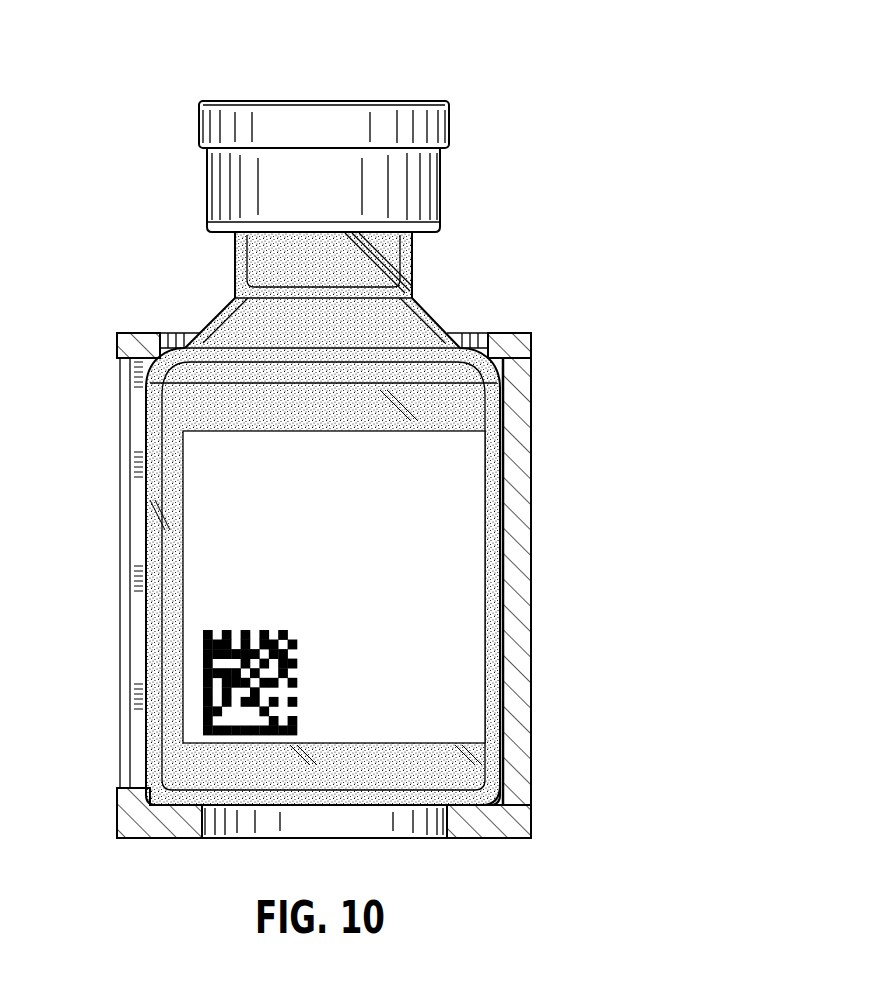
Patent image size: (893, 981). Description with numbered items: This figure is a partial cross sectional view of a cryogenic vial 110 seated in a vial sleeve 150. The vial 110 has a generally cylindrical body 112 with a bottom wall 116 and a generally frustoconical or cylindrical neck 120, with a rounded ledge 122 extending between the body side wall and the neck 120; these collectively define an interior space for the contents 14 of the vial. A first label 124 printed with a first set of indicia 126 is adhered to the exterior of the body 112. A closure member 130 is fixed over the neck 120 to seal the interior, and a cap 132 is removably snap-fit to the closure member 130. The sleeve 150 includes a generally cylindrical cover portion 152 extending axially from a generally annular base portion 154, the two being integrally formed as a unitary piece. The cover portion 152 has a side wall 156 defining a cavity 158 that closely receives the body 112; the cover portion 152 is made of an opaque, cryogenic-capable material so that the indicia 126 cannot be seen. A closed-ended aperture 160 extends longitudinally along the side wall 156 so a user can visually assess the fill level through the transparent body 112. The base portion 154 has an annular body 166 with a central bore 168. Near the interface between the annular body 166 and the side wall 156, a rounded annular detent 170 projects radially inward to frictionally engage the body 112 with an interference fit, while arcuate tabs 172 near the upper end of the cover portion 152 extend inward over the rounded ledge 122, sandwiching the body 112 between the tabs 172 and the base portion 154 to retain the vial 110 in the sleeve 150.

The cryogenic vial 110 is at (167, 46).
The cylindrical body 112 is at (143, 408).
The bottom wall 116 is at (312, 806).
The neck 120 is at (412, 268).
The rounded ledge 122 is at (168, 356).
The first label 124 is at (195, 575).
The first set of indicia 126 is at (213, 450).
The closure member 130 is at (442, 199).
The cap 132 is at (452, 125).
The contents 14 is at (478, 768).
The vial sleeve 150 is at (88, 332).
The cover portion 152 is at (103, 514).
The annular base portion 154 is at (100, 801).
The side wall 156 is at (520, 498).
The cavity 158 is at (503, 645).
The aperture 160 is at (137, 620).
The annular body 166 is at (120, 822).
The central bore 168 is at (447, 823).
The annular detent 170 is at (492, 802).
The arcuate tabs 172 is at (167, 365).